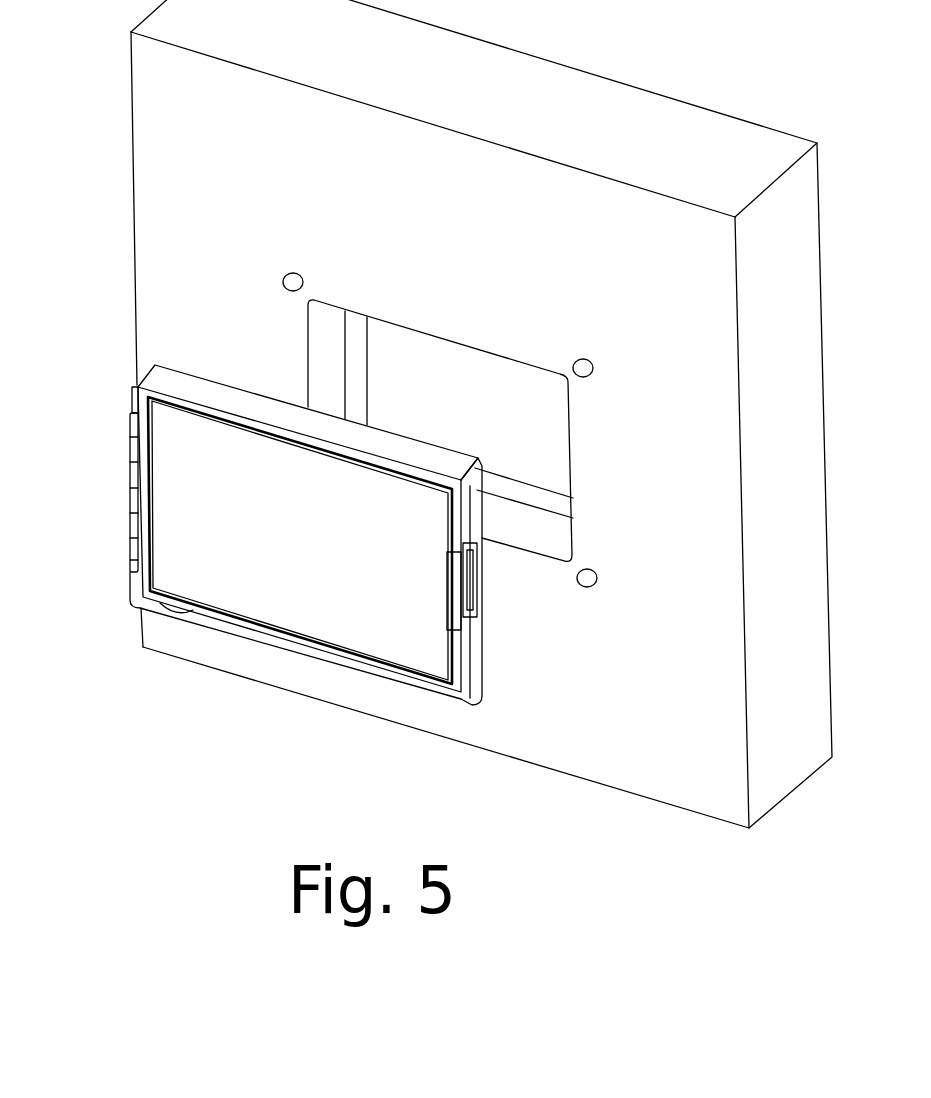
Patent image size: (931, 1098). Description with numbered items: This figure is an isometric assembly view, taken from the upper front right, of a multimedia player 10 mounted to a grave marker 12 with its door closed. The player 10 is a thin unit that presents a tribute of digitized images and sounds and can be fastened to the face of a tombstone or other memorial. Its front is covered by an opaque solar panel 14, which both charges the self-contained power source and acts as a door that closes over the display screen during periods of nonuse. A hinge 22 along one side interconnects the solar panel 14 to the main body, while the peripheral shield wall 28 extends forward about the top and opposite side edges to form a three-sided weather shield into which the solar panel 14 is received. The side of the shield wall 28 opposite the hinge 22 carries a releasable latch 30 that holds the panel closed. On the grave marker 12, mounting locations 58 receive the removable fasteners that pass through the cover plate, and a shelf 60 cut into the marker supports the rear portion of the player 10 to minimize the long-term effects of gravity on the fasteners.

The multimedia player 10 is at (108, 404).
The grave marker 12 is at (712, 130).
The solar panel 14 is at (305, 539).
The hinge 22 is at (130, 468).
The peripheral shield wall 28 is at (205, 392).
The latch 30 is at (481, 618).
The mounting locations 58 is at (293, 273).
The shelf 60 is at (547, 533).